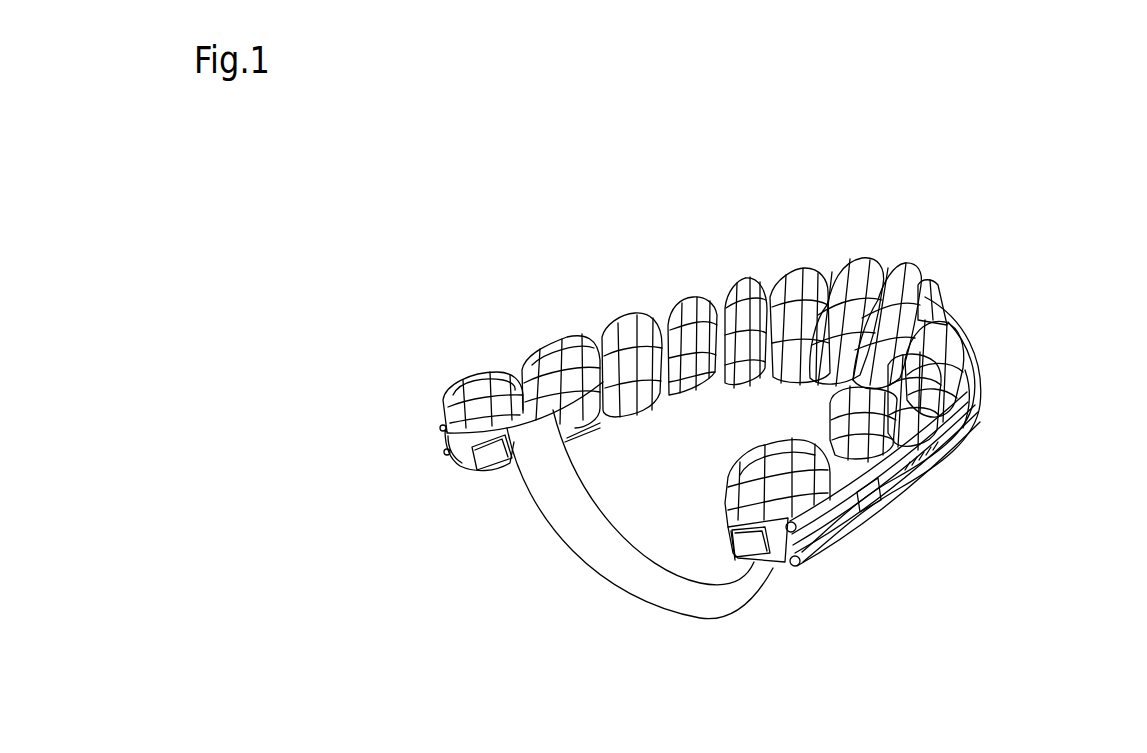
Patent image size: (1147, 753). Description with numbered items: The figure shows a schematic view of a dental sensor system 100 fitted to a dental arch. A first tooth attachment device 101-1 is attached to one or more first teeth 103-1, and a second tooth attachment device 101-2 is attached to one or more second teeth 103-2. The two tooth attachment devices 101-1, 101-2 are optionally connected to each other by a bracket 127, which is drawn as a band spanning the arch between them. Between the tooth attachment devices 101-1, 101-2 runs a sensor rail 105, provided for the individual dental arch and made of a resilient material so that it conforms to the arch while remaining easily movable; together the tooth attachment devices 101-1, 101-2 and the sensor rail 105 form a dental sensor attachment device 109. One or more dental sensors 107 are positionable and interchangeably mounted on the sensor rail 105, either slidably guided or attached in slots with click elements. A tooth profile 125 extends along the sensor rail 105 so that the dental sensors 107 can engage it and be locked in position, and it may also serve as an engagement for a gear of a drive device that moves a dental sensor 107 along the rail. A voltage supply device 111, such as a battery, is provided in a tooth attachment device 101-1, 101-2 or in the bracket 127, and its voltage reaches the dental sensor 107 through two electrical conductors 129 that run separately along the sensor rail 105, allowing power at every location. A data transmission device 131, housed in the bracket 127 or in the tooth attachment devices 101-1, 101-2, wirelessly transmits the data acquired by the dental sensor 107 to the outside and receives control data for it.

The dental sensor system 100 is at (857, 192).
The first tooth attachment device 101-1 is at (779, 566).
The second tooth attachment device 101-2 is at (458, 453).
The first teeth 103-1 is at (746, 460).
The second teeth 103-2 is at (459, 385).
The sensor rail 105 is at (978, 410).
The dental sensor 107 is at (893, 500).
The dental sensor attachment device 109 is at (984, 344).
The voltage supply device 111 is at (752, 550).
The tooth profile 125 is at (940, 448).
The bracket 127 is at (654, 587).
The electrical conductors 129 is at (795, 529).
The data transmission device 131 is at (490, 455).